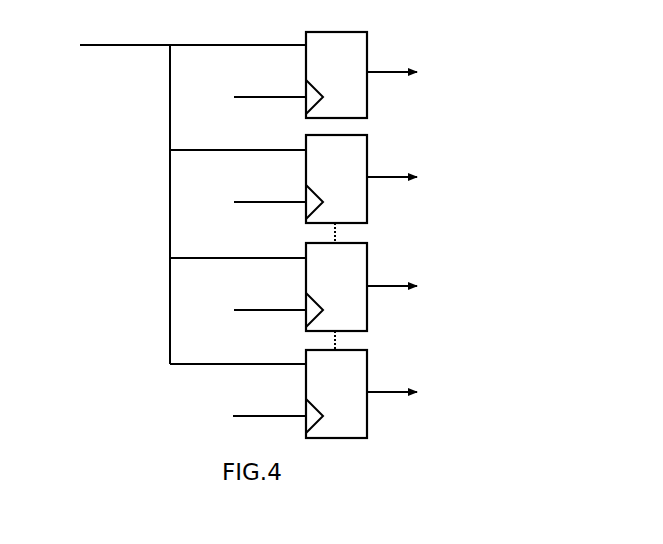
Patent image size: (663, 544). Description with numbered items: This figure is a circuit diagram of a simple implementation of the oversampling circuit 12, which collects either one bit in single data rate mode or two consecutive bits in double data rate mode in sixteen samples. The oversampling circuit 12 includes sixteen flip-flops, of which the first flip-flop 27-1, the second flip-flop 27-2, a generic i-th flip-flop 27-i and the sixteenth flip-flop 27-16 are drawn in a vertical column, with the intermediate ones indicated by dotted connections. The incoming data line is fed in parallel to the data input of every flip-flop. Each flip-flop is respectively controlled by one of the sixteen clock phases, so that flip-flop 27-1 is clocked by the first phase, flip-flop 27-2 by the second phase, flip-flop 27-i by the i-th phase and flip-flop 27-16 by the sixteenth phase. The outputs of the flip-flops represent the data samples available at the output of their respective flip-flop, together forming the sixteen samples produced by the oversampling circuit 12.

The oversampling circuit 12 is at (502, 64).
The flip-flop 27-1 is at (367, 48).
The flip-flop 27-2 is at (367, 152).
The flip-flop 27-i is at (367, 260).
The flip-flop 27-16 is at (367, 366).